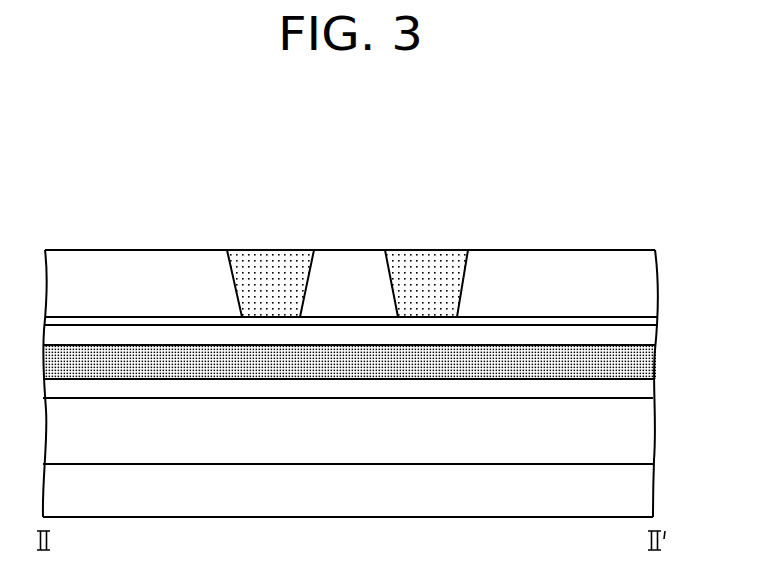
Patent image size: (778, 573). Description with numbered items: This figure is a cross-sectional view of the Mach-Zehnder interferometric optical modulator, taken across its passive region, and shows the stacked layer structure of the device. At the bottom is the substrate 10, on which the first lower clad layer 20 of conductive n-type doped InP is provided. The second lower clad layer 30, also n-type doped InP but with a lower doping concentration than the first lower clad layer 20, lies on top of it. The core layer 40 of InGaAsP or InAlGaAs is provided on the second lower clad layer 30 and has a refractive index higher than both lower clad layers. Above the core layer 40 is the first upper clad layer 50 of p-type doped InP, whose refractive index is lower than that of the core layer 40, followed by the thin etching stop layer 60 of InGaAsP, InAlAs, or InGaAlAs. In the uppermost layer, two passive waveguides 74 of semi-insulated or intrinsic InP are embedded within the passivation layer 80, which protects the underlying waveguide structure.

The substrate 10 is at (642, 490).
The first lower clad layer 20 is at (648, 432).
The second lower clad layer 30 is at (650, 387).
The core layer 40 is at (645, 362).
The first upper clad layer 50 is at (647, 335).
The etching stop layer 60 is at (645, 320).
The passive waveguides 74 is at (427, 268).
The passivation layer 80 is at (648, 285).